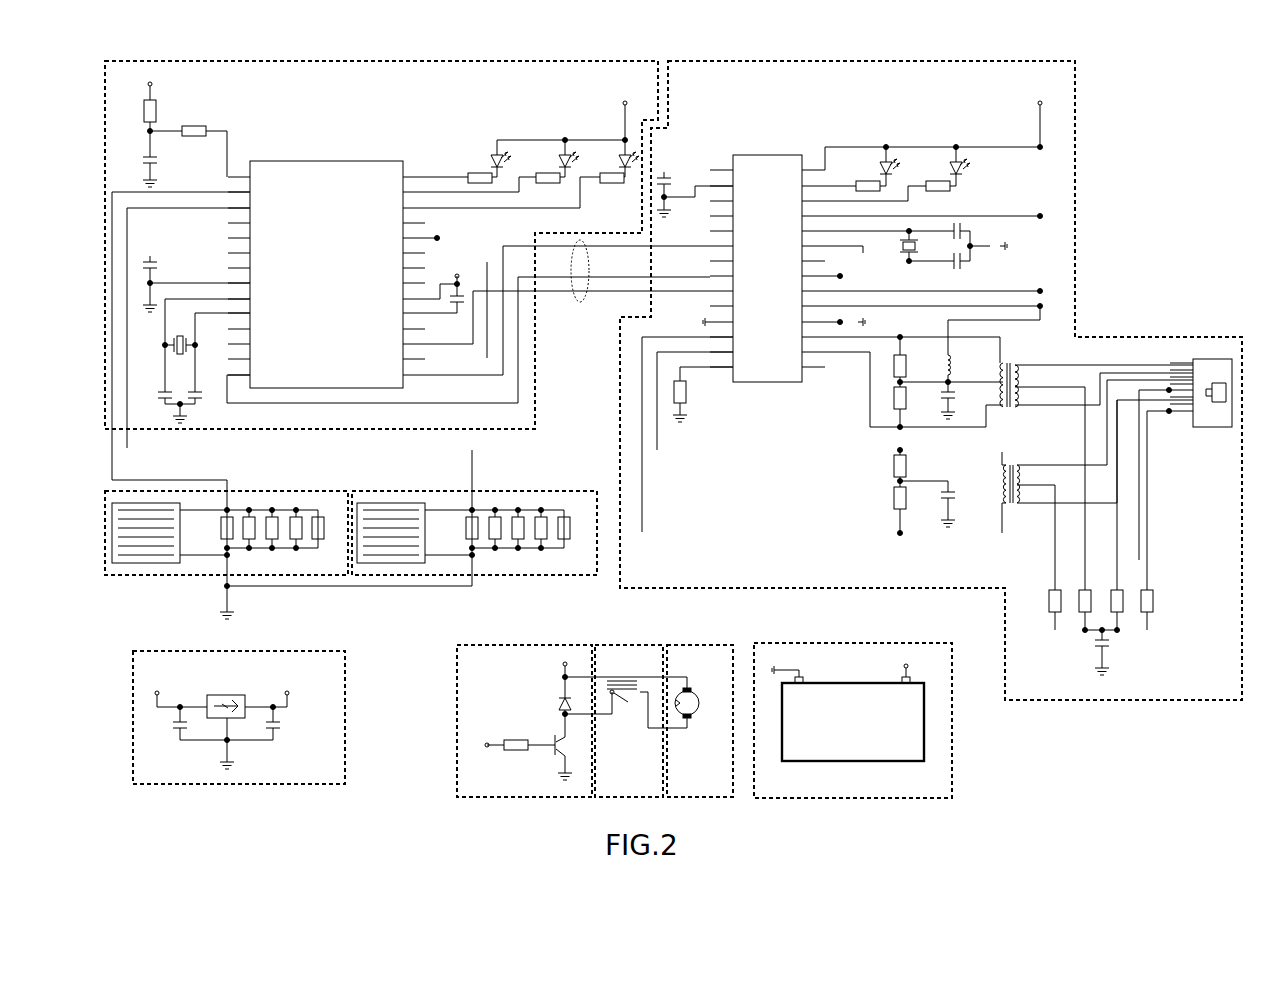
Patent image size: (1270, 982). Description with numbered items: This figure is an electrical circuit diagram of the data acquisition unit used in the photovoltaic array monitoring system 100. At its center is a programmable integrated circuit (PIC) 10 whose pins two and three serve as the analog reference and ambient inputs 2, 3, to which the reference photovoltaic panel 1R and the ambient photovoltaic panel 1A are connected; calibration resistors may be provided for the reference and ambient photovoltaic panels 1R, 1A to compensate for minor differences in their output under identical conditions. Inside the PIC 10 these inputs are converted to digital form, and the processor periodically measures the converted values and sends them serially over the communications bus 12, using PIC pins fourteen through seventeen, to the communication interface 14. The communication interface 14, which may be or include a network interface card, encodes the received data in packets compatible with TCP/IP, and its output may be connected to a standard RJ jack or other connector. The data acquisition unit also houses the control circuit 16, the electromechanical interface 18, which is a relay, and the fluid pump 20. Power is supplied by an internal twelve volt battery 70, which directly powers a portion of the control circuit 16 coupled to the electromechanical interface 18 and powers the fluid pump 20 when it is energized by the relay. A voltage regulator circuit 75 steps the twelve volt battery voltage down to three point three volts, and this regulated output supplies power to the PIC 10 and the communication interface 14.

The photovoltaic array monitoring system 100 is at (1163, 95).
The programmable integrated circuit 10 is at (521, 424).
The communications bus 12 is at (582, 303).
The communication interface 14 is at (1228, 692).
The reference photovoltaic panel 1R is at (345, 569).
The ambient photovoltaic panel 1A is at (592, 569).
The reference input 2 is at (228, 483).
The ambient input 3 is at (472, 460).
The 12 VDC battery 70 is at (335, 780).
The control circuit 16 is at (495, 792).
The electromechanical interface 18 is at (644, 792).
The fluid pump 20 is at (732, 792).
The voltage regulator circuit 75 is at (948, 797).